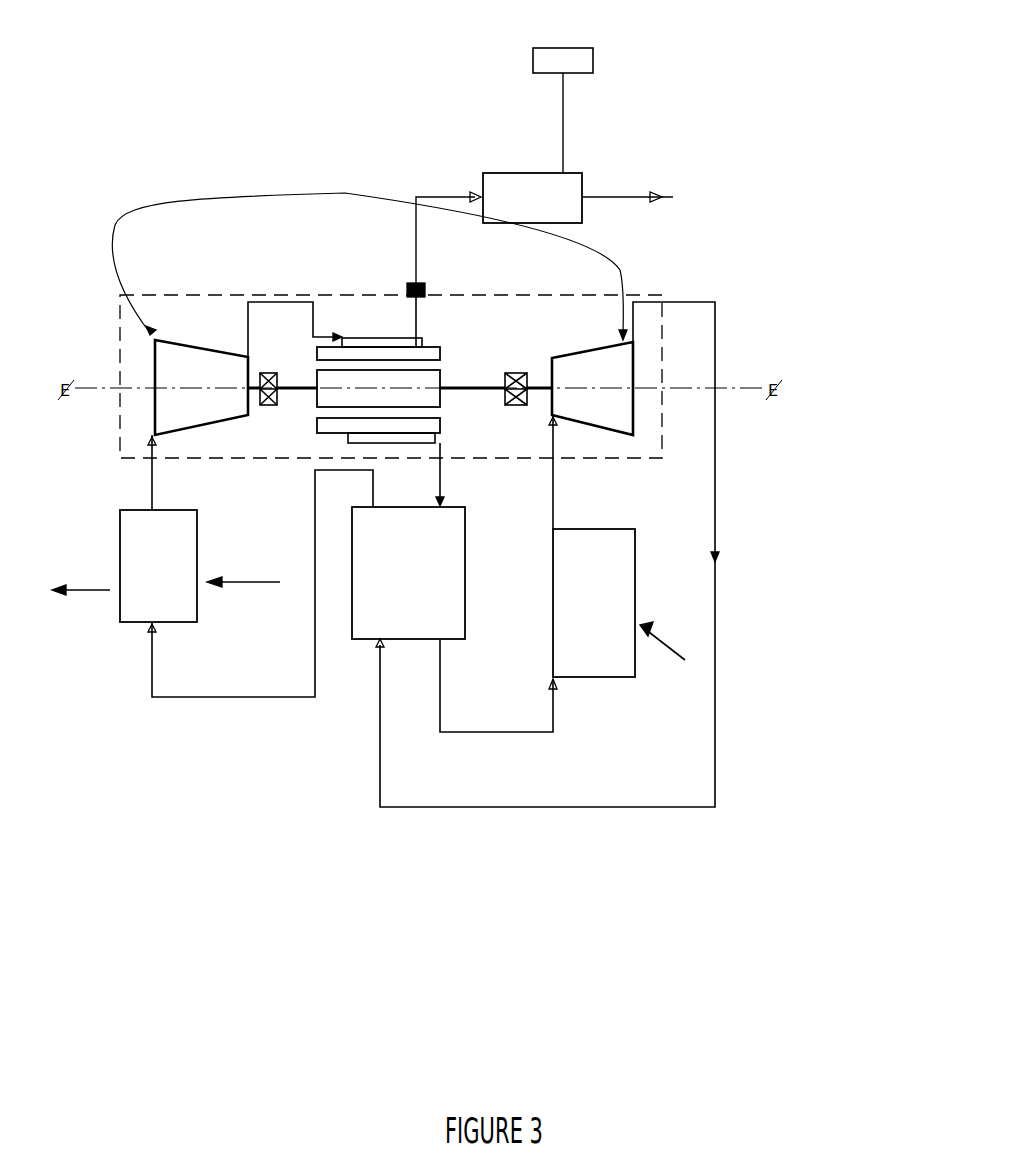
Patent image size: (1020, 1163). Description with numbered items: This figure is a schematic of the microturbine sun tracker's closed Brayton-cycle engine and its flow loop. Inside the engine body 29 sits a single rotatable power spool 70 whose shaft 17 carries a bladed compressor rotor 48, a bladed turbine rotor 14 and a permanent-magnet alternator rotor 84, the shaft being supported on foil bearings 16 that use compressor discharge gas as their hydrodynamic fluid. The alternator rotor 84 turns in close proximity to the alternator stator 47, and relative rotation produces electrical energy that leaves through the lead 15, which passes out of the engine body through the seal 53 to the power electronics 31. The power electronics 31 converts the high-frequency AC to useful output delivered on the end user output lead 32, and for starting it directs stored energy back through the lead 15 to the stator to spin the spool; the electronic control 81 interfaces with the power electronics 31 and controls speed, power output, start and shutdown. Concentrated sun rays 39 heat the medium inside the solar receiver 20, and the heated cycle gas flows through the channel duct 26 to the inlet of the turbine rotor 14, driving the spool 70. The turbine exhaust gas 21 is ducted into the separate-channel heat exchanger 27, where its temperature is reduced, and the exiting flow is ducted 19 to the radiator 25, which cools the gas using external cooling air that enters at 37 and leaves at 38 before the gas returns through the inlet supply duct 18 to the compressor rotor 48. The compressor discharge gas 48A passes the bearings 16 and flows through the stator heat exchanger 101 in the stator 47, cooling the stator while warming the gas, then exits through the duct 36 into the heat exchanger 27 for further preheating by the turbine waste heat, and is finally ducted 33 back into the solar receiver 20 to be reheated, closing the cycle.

The power spool 70 is at (345, 194).
The compressor rotor 48 is at (196, 347).
The compressor discharge gas flow 48A is at (271, 304).
The shaft 17 is at (472, 388).
The foil bearing 16 is at (266, 407).
The alternator rotor 84 is at (409, 348).
The alternator stator 47 is at (347, 292).
The stator heat exchanger 101 is at (342, 246).
The engine body seal 53 is at (380, 284).
The lead 15 is at (417, 197).
The power electronics 31 is at (547, 180).
The electronic control 81 is at (610, 93).
The end user output lead 32 is at (665, 195).
The turbine rotor 14 is at (565, 365).
The engine body 29 is at (640, 290).
The turbine exhaust gas 21 is at (715, 495).
The channel duct 26 is at (553, 493).
The inlet supply duct 18 is at (150, 475).
The radiator 25 is at (160, 595).
The external cooling air flow outlet 38 is at (81, 606).
The external cooling air flow inlet 37 is at (243, 598).
The heat exchanger exiting flow duct 19 is at (248, 697).
The heat exchanger 27 is at (363, 630).
The duct 36 is at (443, 472).
The duct 33 is at (500, 732).
The solar receiver 20 is at (625, 665).
The concentrated sun rays 39 is at (662, 657).